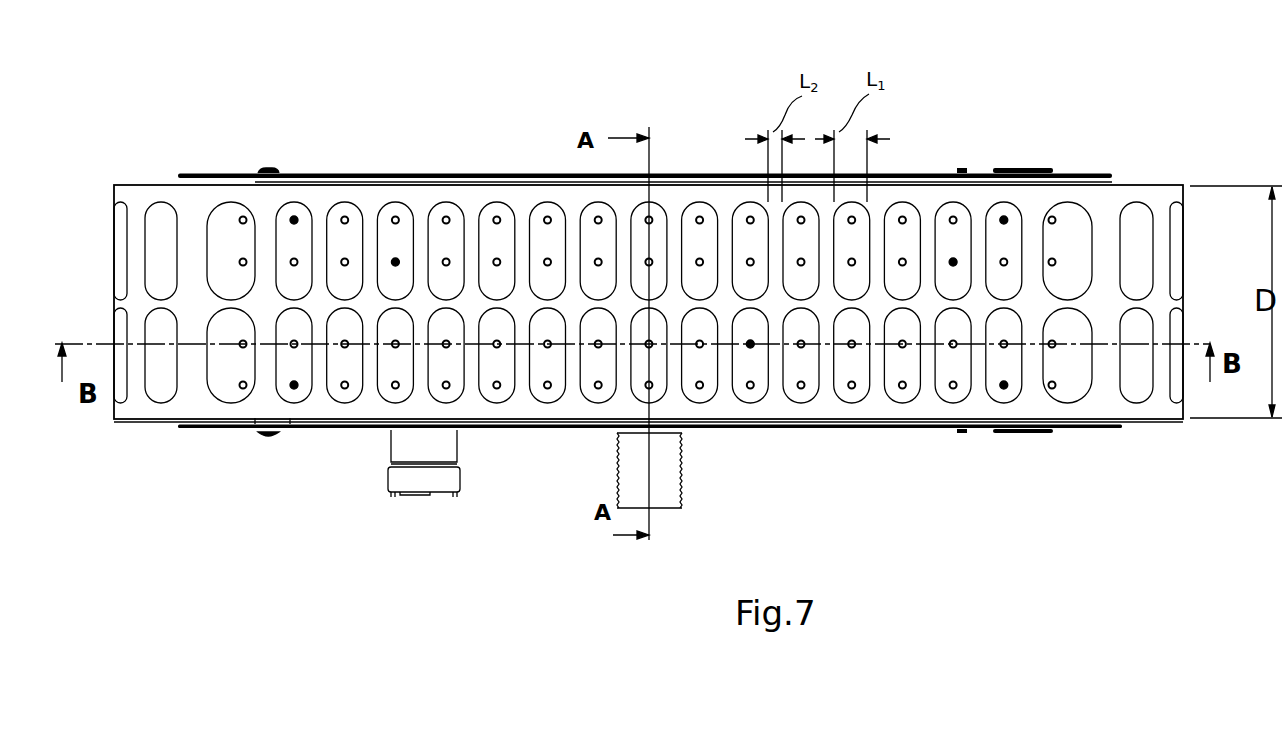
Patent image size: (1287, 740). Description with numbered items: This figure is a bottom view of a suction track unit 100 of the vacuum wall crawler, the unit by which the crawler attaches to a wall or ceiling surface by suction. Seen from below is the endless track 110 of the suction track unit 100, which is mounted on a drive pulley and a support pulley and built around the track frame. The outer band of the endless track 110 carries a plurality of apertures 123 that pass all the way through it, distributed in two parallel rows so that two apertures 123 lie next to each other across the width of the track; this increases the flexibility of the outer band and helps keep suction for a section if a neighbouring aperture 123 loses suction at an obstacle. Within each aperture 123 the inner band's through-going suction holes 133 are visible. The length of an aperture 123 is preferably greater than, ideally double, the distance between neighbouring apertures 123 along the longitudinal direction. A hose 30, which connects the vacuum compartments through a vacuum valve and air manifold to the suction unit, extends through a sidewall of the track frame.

The suction track unit 100 is at (904, 141).
The endless track 110 is at (1160, 197).
The aperture 123 is at (350, 240).
The suction hole 133 is at (250, 262).
The hose 30 is at (678, 486).